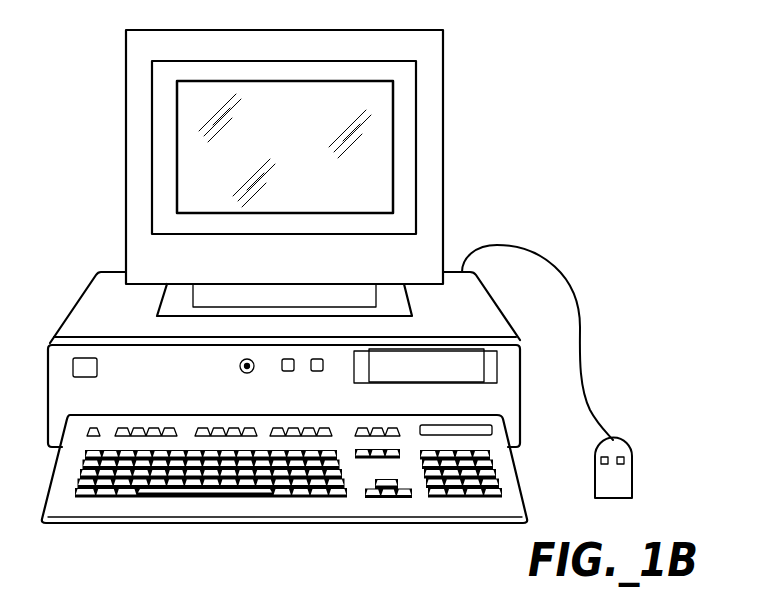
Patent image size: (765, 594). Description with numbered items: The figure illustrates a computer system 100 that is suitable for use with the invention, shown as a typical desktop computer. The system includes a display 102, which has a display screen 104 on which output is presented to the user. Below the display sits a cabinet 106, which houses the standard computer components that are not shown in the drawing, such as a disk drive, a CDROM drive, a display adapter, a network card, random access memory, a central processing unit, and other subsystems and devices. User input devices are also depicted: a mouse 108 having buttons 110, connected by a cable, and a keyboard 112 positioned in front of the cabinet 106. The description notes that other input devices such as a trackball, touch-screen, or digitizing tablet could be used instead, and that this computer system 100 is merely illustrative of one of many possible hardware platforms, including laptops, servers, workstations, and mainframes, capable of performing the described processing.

The computer system 100 is at (566, 95).
The display 102 is at (319, 173).
The display screen 104 is at (380, 145).
The cabinet 106 is at (483, 315).
The mouse 108 is at (644, 473).
The buttons 110 is at (605, 457).
The keyboard 112 is at (137, 524).